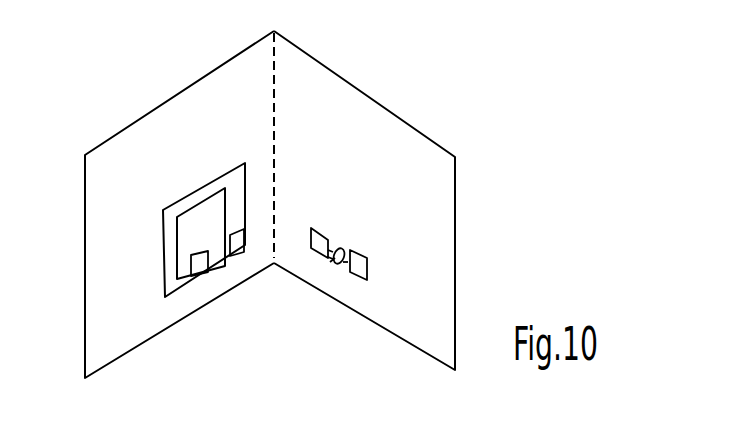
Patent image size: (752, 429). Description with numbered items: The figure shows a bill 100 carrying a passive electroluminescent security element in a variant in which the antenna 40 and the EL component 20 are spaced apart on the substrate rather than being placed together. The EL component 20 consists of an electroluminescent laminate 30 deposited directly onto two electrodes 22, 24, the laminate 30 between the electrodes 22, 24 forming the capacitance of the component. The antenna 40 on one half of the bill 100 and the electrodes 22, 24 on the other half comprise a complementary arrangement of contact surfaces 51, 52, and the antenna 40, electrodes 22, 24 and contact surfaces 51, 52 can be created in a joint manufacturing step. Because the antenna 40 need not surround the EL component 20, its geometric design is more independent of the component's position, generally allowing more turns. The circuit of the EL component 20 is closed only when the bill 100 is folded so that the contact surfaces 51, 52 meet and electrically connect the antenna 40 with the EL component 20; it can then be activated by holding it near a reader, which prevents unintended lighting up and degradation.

The bill 100 is at (363, 70).
The antenna 40 is at (193, 190).
The contact surfaces 51 is at (240, 253).
The contact surfaces 52 is at (320, 228).
The EL component 20 is at (335, 272).
The electrode 22 is at (330, 264).
The electroluminescent laminate 30 is at (333, 256).
The electrode 24 is at (342, 278).